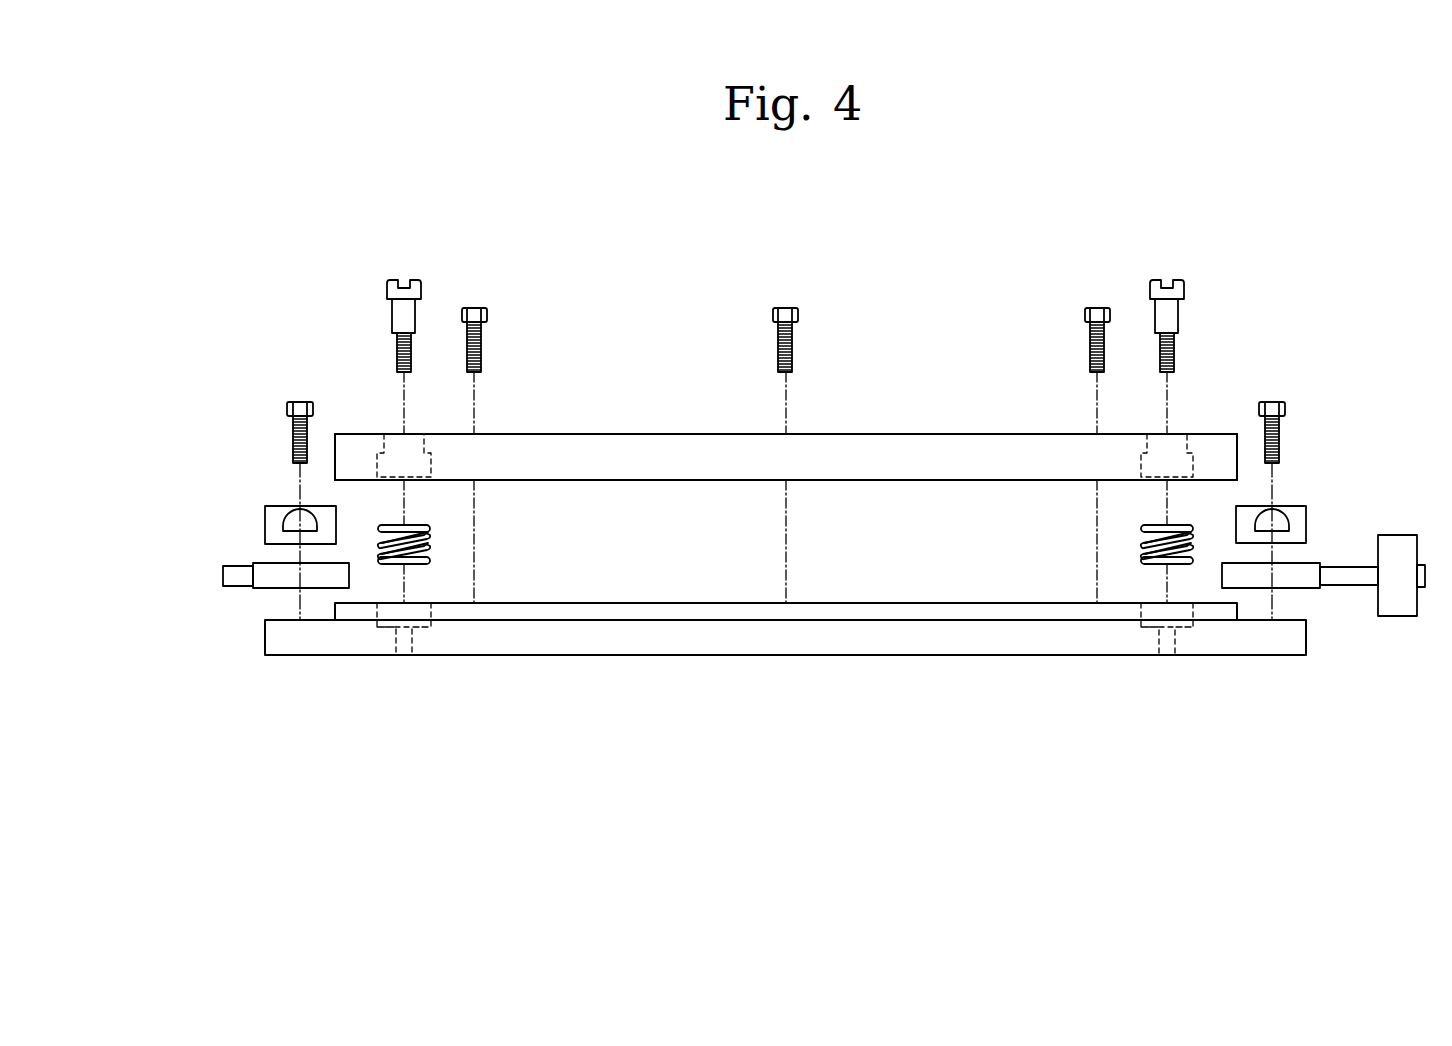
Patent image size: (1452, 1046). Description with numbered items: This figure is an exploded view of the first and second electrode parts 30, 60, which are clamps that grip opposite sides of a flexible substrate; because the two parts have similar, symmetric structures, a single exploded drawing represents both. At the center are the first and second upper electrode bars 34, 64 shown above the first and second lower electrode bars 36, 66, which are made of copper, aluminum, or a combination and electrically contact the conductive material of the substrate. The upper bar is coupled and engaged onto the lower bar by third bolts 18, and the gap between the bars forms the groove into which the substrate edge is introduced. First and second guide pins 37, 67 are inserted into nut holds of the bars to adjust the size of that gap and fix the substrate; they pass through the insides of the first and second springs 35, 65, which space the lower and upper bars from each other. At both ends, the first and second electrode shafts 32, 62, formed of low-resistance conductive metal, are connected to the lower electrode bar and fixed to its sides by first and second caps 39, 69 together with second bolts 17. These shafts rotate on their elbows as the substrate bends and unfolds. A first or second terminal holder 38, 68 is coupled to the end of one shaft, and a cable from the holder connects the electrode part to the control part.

The second bolts 17 is at (300, 402).
The third bolts 18 is at (478, 308).
The first electrode part 30 is at (847, 335).
The second electrode part 60 is at (1292, 255).
The first electrode shafts 32 is at (752, 546).
The second electrode shafts 62 is at (225, 574).
The first upper electrode bar 34 is at (786, 429).
The second upper electrode bar 64 is at (673, 445).
The first springs 35 is at (785, 545).
The second spring 65 is at (430, 546).
The first lower electrode bar 36 is at (785, 660).
The second lower electrode bar 66 is at (747, 645).
The first guide pins 37 is at (803, 410).
The second guide pins 67 is at (412, 282).
The first terminal holder 38 is at (1413, 545).
The second terminal holder 68 is at (1403, 535).
The first caps 39 is at (735, 525).
The second caps 69 is at (272, 521).